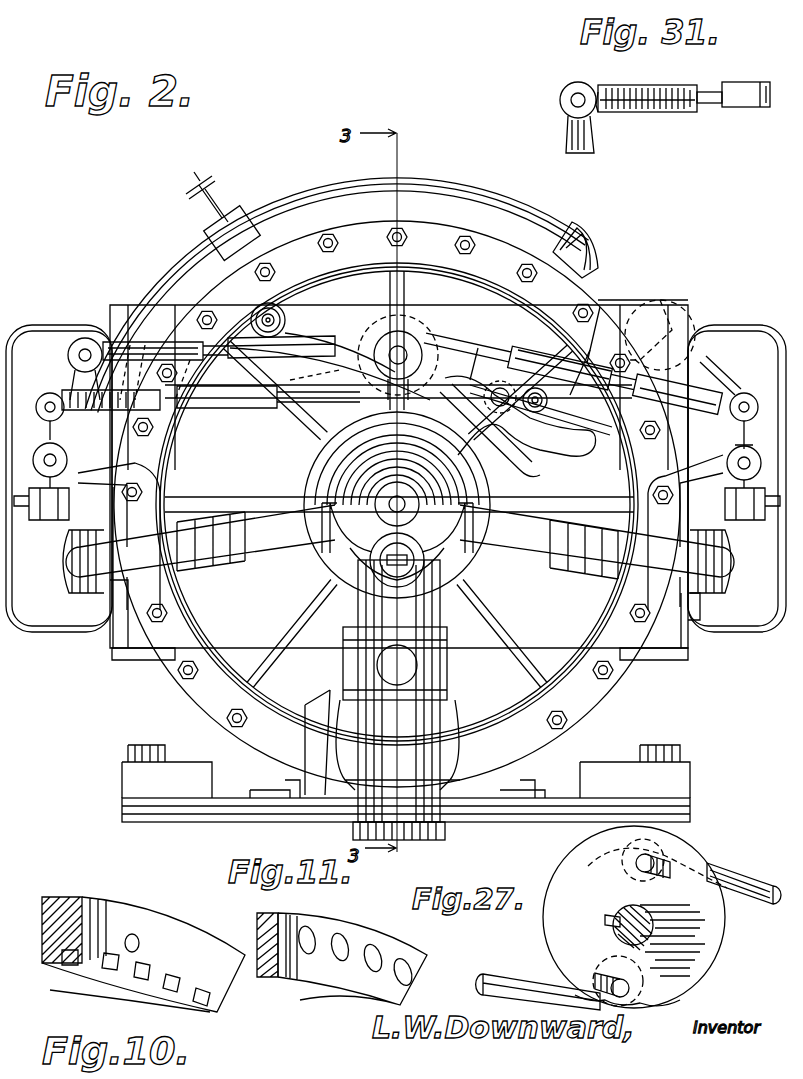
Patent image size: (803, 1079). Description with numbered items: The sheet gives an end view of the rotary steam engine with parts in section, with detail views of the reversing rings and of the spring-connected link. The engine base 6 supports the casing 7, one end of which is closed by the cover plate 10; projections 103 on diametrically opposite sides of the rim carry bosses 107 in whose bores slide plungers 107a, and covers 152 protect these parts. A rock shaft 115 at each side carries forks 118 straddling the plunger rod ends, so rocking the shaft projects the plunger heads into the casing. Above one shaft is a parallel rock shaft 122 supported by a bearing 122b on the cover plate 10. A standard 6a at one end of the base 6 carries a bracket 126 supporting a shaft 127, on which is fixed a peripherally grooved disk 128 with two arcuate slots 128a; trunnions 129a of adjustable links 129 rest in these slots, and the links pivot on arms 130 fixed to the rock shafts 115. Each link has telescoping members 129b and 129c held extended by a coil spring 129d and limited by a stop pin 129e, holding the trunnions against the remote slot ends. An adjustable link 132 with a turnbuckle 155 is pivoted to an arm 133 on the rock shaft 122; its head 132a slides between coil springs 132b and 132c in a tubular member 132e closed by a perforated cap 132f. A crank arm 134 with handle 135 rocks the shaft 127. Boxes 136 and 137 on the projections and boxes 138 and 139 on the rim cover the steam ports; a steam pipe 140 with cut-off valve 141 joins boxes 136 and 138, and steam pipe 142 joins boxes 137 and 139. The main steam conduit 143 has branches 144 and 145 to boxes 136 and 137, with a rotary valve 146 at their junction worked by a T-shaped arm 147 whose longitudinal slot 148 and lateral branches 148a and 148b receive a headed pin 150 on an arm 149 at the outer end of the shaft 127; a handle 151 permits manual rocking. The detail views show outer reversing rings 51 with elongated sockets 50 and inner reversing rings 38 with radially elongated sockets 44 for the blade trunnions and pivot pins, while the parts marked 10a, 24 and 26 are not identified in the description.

In FIG. 2, the engine base 6 is at (665, 805).
In FIG. 2, the standard 6a is at (450, 755).
In FIG. 2, the casing 7 is at (598, 320).
In FIG. 2, the cover plate 10 is at (515, 320).
In FIG. 2, the flange 10a is at (452, 232).
In FIG. 2, the bearing block 24 is at (478, 698).
In FIG. 2, the column support 26 is at (446, 835).
In FIG. 11, the inner reversing rings 38 is at (268, 985).
In FIG. 11, the radially elongated sockets 44 is at (372, 948).
In FIG. 10, the elongated sockets 50 is at (165, 985).
In FIG. 10, the outer reversing rings 51 is at (62, 897).
In FIG. 2, the projections 103 is at (130, 645).
In FIG. 2, the bosses 107 is at (70, 545).
In FIG. 2, the plungers 107a is at (40, 522).
In FIG. 2, the rock shaft 115 is at (100, 458).
In FIG. 2, the fork 118 is at (747, 530).
In FIG. 2, the rock shaft 122 is at (100, 432).
In FIG. 2, the bearing 122b is at (190, 408).
In FIG. 2, the bracket 126 is at (440, 606).
In FIG. 2, the shaft 127 is at (408, 340).
In FIG. 27, the shaft 127 is at (653, 922).
In FIG. 2, the peripherally grooved disk 128 is at (375, 350).
In FIG. 27, the peripherally grooved disk 128 is at (708, 965).
In FIG. 27, the arcuate slots 128a is at (663, 862).
In FIG. 2, the adjustable links 129 is at (458, 345).
In FIG. 27, the adjustable links 129 is at (740, 872).
In FIG. 27, the trunnions 129a is at (647, 863).
In FIG. 2, the telescoping member 129b is at (278, 372).
In FIG. 2, the telescoping member 129c is at (48, 393).
In FIG. 2, the coil spring 129d is at (128, 340).
In FIG. 2, the stop pin 129e is at (180, 322).
In FIG. 2, the arms 130 is at (45, 388).
In FIG. 2, the adjustable link 132 is at (232, 340).
In FIG. 31, the head 132a is at (652, 88).
In FIG. 31, the coil spring 132b is at (614, 86).
In FIG. 31, the coil spring 132c is at (680, 83).
In FIG. 31, the tubular member 132e is at (662, 113).
In FIG. 31, the perforated cap 132f is at (700, 107).
In FIG. 2, the arm 133 is at (80, 338).
In FIG. 31, the arm 133 is at (591, 143).
In FIG. 2, the crank arm 134 is at (325, 340).
In FIG. 2, the handle 135 is at (275, 305).
In FIG. 2, the box 136 is at (108, 600).
In FIG. 2, the box 137 is at (700, 580).
In FIG. 2, the box 138 is at (592, 250).
In FIG. 2, the box 139 is at (664, 302).
In FIG. 2, the steam pipe 140 is at (296, 208).
In FIG. 2, the cut-off valve 141 is at (218, 215).
In FIG. 2, the steam pipe 142 is at (702, 380).
In FIG. 2, the main steam conduit 143 is at (315, 735).
In FIG. 2, the branch 144 is at (275, 543).
In FIG. 2, the branch 145 is at (510, 545).
In FIG. 2, the rotary valve 146 is at (385, 574).
In FIG. 2, the T-shaped arm 147 is at (528, 452).
In FIG. 2, the longitudinal slot 148 is at (500, 470).
In FIG. 2, the lateral branch 148a is at (490, 392).
In FIG. 2, the lateral branch 148b is at (548, 400).
In FIG. 2, the arm 149 is at (478, 362).
In FIG. 2, the headed pin 150 is at (585, 365).
In FIG. 2, the handle 151 is at (625, 372).
In FIG. 2, the covers 152 is at (12, 345).
In FIG. 2, the turnbuckle 155 is at (300, 340).
In FIG. 31, the turnbuckle 155 is at (763, 117).